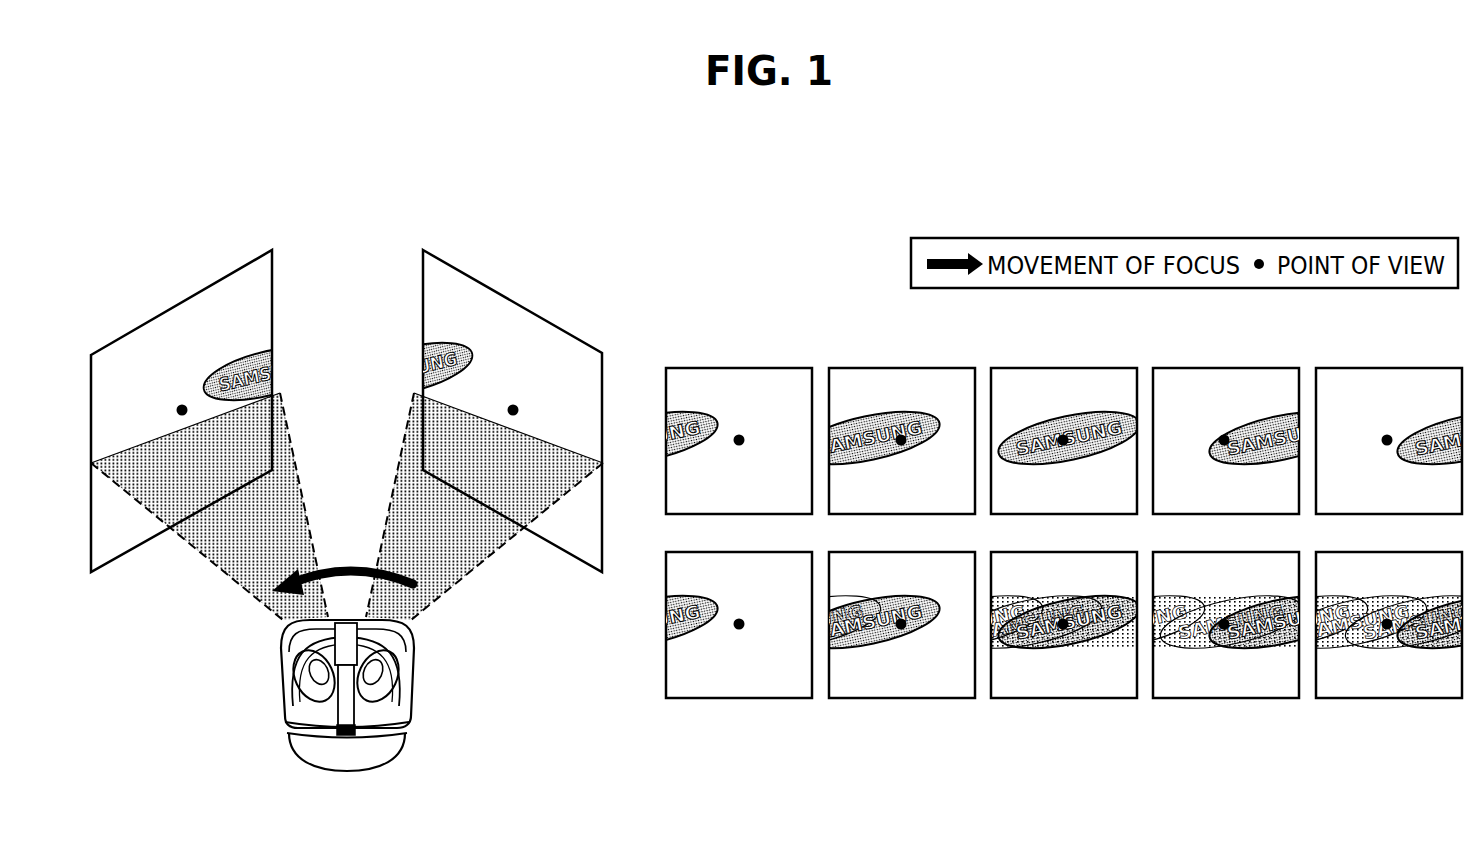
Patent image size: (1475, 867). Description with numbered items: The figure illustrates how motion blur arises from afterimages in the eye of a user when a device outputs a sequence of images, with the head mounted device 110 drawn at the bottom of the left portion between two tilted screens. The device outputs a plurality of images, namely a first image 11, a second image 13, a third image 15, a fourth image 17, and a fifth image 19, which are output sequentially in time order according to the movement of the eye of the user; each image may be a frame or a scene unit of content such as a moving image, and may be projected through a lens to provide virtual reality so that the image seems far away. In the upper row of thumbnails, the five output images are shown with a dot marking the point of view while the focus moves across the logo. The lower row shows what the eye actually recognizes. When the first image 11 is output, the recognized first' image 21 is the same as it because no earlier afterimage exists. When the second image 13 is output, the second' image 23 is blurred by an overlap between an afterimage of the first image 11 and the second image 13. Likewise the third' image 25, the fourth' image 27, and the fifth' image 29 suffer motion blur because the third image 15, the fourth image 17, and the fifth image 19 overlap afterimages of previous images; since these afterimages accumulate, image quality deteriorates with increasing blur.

The first image 11 is at (512, 298).
The second image 13 is at (884, 424).
The third image 15 is at (1067, 424).
The fourth image 17 is at (1254, 424).
The fifth image 19 is at (181, 297).
The first' image 21 is at (692, 608).
The second' image 23 is at (855, 608).
The third' image 25 is at (1020, 608).
The fourth' image 27 is at (1207, 608).
The fifth' image 29 is at (1348, 608).
The head mounted display device 110 is at (418, 652).